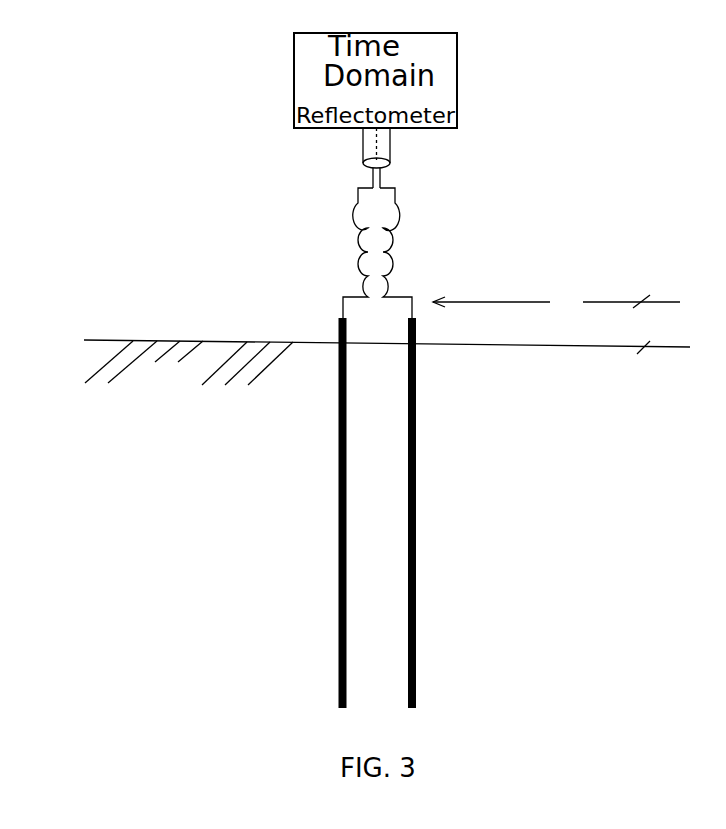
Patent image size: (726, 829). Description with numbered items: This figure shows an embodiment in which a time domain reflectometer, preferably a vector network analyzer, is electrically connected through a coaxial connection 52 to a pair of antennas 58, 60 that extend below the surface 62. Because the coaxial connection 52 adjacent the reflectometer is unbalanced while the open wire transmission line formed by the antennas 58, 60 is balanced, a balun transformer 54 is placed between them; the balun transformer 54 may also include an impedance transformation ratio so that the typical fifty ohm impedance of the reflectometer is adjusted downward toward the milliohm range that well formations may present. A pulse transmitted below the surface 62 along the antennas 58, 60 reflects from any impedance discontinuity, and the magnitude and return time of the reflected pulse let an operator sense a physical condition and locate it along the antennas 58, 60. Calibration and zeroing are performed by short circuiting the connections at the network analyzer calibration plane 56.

The coaxial connection 52 is at (355, 143).
The balun transformer 54 is at (426, 253).
The network analyzer calibration plane 56 is at (320, 296).
The antenna 58 is at (338, 453).
The antenna 60 is at (416, 453).
The surface 62 is at (387, 372).